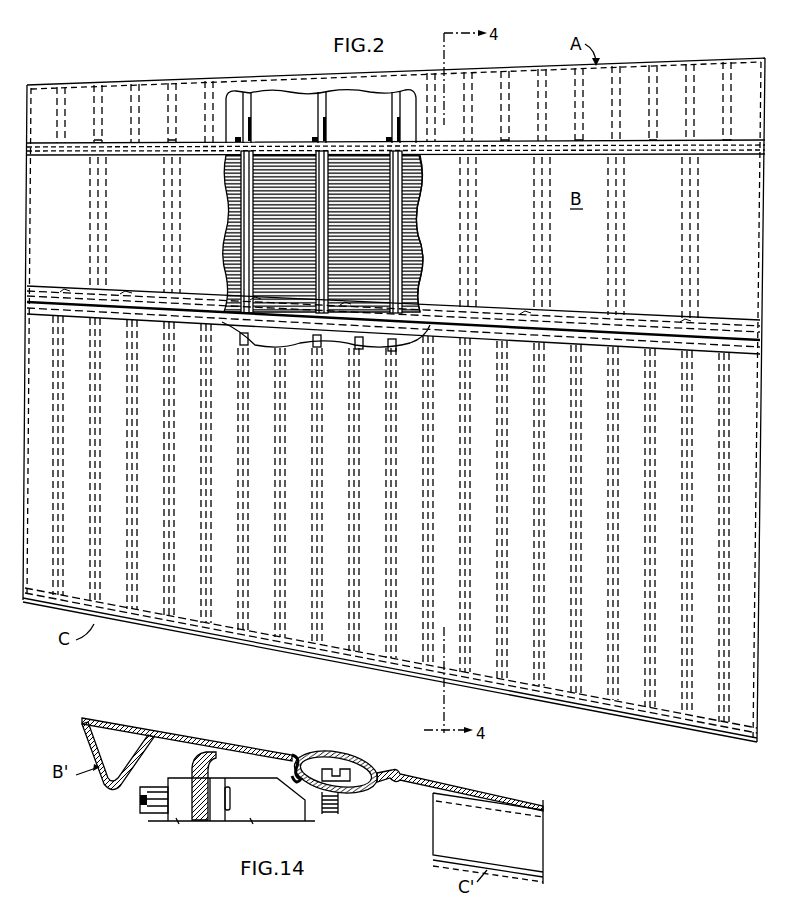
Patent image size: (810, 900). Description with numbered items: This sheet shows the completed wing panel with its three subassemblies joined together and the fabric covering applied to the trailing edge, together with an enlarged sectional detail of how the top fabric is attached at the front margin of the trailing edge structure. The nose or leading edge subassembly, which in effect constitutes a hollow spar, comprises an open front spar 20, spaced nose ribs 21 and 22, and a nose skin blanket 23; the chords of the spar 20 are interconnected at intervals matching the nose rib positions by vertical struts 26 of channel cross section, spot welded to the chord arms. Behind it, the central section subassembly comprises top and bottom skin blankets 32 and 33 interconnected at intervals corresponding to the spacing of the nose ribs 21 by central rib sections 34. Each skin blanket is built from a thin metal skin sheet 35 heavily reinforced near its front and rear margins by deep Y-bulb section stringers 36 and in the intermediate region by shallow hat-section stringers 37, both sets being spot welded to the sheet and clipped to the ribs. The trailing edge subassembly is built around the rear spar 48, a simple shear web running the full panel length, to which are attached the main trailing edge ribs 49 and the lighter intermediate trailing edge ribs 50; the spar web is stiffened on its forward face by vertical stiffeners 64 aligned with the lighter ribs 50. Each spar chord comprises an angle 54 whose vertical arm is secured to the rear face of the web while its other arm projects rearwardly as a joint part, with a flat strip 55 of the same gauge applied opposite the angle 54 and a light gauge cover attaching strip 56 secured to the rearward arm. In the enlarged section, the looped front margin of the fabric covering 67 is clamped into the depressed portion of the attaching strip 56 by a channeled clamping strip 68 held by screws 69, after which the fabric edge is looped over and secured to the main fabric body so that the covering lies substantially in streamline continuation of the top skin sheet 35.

In FIG. 2, the front spar 20 is at (372, 148).
In FIG. 2, the nose rib 21 is at (252, 106).
In FIG. 2, the nose rib 22 is at (213, 90).
In FIG. 2, the nose skin blanket 23 is at (338, 82).
In FIG. 2, the vertical strut 26 is at (238, 138).
In FIG. 2, the top skin blanket 32 is at (150, 192).
In FIG. 14, the top skin blanket 32 is at (104, 716).
In FIG. 2, the bottom skin blanket 33 is at (270, 160).
In FIG. 2, the central rib section 34 is at (242, 232).
In FIG. 14, the skin sheet 35 is at (140, 728).
In FIG. 2, the stringer 36 is at (420, 180).
In FIG. 2, the stringer 37 is at (416, 226).
In FIG. 2, the rear spar 48 is at (346, 324).
In FIG. 2, the main trailing edge rib 49 is at (340, 653).
In FIG. 2, the intermediate trailing edge rib 50 is at (283, 566).
In FIG. 14, the angle 54 is at (210, 752).
In FIG. 14, the flat strip 55 is at (192, 772).
In FIG. 14, the cover attaching strip 56 is at (291, 760).
In FIG. 2, the vertical stiffener 64 is at (622, 318).
In FIG. 14, the fabric covering 67 is at (500, 799).
In FIG. 14, the clamping strip 68 is at (358, 776).
In FIG. 14, the screw 69 is at (336, 768).